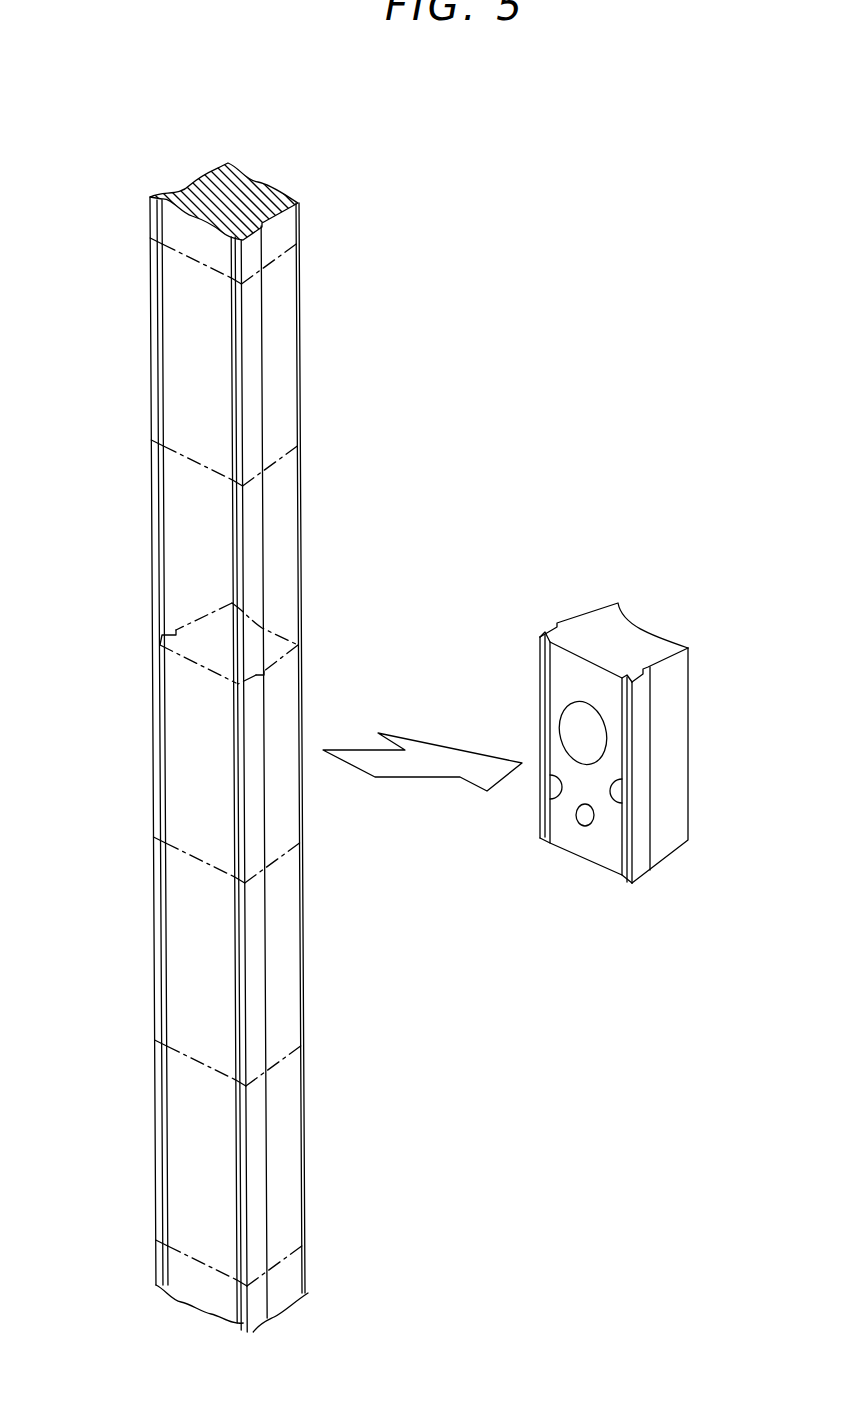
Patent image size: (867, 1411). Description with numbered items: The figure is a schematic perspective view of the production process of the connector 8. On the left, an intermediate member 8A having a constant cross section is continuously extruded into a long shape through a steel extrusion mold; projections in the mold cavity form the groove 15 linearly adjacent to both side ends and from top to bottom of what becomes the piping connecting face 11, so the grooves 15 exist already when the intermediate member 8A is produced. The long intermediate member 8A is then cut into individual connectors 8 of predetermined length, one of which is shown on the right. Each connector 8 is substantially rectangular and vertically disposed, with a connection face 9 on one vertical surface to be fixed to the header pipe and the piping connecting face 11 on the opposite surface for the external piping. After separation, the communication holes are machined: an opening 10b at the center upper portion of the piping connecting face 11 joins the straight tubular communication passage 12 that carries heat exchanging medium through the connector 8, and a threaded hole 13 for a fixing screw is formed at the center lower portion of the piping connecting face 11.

The intermediate member 8A is at (352, 277).
The connector 8 is at (546, 605).
The connection face 9 is at (637, 625).
The opening 10b is at (606, 734).
The piping connecting face 11 is at (570, 673).
The communication passage 12 is at (580, 725).
The threaded hole 13 is at (588, 818).
The groove 15 is at (150, 320).